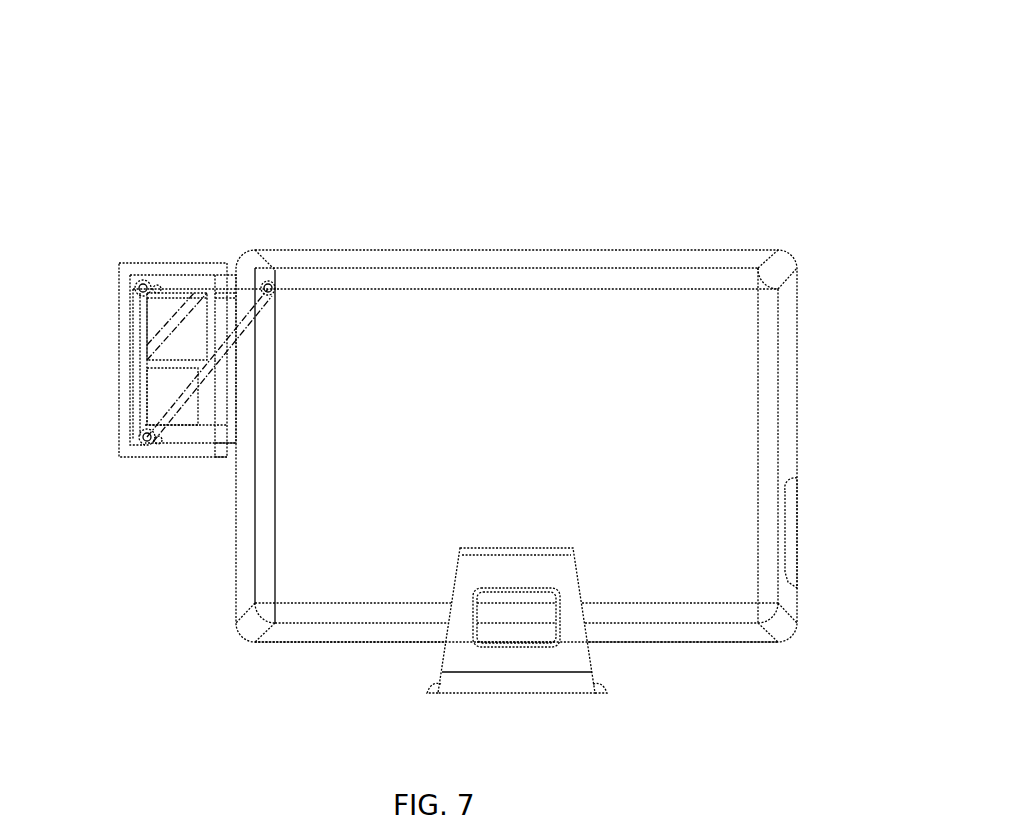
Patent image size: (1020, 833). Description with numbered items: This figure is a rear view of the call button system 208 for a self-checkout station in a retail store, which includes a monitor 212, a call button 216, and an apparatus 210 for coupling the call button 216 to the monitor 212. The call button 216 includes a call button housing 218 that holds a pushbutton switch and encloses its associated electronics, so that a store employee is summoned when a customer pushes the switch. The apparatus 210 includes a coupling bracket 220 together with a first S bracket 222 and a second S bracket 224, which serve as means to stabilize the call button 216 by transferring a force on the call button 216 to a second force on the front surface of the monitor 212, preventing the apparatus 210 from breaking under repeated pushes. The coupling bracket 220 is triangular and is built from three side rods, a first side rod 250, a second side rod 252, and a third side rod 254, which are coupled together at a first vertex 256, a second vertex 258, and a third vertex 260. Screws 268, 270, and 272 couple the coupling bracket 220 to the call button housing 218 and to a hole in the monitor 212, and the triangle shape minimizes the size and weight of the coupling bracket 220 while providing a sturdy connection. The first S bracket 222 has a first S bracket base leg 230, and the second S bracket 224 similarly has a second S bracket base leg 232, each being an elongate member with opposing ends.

The call button system 208 is at (588, 86).
The apparatus 210 is at (108, 257).
The monitor 212 is at (617, 262).
The call button 216 is at (172, 226).
The call button housing 218 is at (157, 268).
The coupling bracket 220 is at (113, 364).
The first S bracket 222 is at (233, 262).
The second S bracket 224 is at (233, 465).
The first S bracket base leg 230 is at (178, 290).
The second S bracket base leg 232 is at (193, 437).
The first side rod 250 is at (143, 370).
The second side rod 252 is at (198, 273).
The third side rod 254 is at (209, 368).
The first vertex 256 is at (142, 293).
The second vertex 258 is at (138, 441).
The third vertex 260 is at (270, 284).
The screw 268 is at (140, 288).
The screw 270 is at (144, 442).
The screw 272 is at (277, 293).